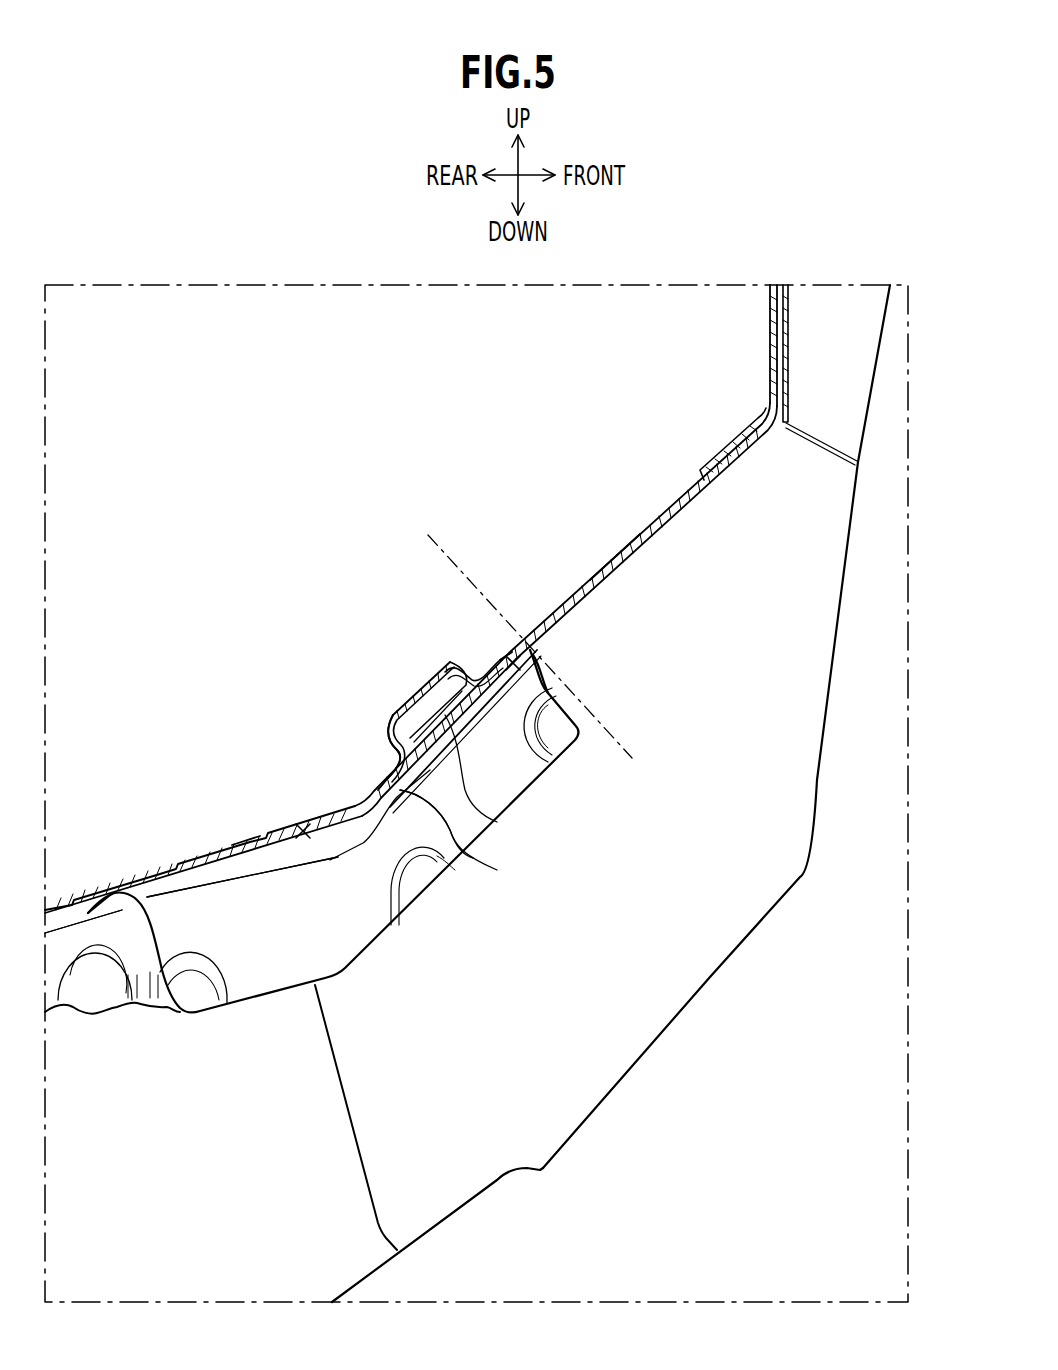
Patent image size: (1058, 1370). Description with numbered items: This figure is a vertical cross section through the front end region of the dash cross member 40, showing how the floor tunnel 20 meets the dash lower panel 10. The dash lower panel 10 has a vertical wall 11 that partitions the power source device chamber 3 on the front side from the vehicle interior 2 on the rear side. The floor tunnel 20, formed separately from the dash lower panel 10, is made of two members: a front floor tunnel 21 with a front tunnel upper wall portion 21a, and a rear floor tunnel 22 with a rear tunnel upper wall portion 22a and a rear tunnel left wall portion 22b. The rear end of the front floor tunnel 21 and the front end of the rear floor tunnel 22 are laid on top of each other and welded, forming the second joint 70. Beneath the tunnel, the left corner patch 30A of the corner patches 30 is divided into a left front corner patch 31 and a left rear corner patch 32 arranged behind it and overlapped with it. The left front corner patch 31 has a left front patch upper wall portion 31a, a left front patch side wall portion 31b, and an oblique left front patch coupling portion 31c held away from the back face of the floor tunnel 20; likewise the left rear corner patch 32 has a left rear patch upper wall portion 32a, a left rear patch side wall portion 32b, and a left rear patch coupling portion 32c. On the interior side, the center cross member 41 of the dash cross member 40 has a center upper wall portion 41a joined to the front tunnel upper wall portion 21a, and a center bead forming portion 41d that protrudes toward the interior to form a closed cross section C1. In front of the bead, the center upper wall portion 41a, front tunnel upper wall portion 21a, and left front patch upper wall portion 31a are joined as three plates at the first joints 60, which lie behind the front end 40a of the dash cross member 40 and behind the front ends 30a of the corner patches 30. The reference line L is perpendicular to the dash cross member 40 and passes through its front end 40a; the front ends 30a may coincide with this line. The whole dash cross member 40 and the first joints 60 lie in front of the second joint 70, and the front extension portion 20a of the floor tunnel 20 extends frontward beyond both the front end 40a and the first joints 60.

The vehicle interior 2 is at (224, 585).
The power source device chamber 3 is at (873, 729).
The dash lower panel 10 is at (882, 381).
The vertical wall 11 is at (795, 322).
The floor tunnel 20 is at (411, 826).
The front floor tunnel 21 is at (620, 542).
The front tunnel upper wall portion 21a is at (591, 582).
The front extension portion 20a is at (681, 496).
The rear floor tunnel 22 is at (281, 822).
The rear tunnel upper wall portion 22a is at (232, 845).
The rear tunnel left wall portion 22b is at (318, 1137).
The corner patches 30 is at (350, 962).
The left corner patch 30A is at (350, 962).
The front ends of the corner patches 30a is at (536, 656).
The left front corner patch 31 is at (453, 904).
The left front patch upper wall portion 31a is at (520, 760).
The left front patch side wall portion 31b is at (473, 858).
The left front patch coupling portion 31c is at (416, 893).
The left rear corner patch 32 is at (370, 1283).
The left rear patch upper wall portion 32a is at (130, 880).
The left rear patch side wall portion 32b is at (90, 940).
The left rear patch coupling portion 32c is at (92, 912).
The dash cross member 40 is at (439, 683).
The front end of the dash cross member 40a is at (516, 658).
The center cross member 41 is at (416, 680).
The center upper wall portion 41a is at (497, 664).
The center bead forming portion 41d is at (405, 722).
The first joints 60 is at (521, 672).
The second joint 70 is at (304, 830).
The reference line L is at (528, 612).
The closed cross section C1 is at (553, 848).